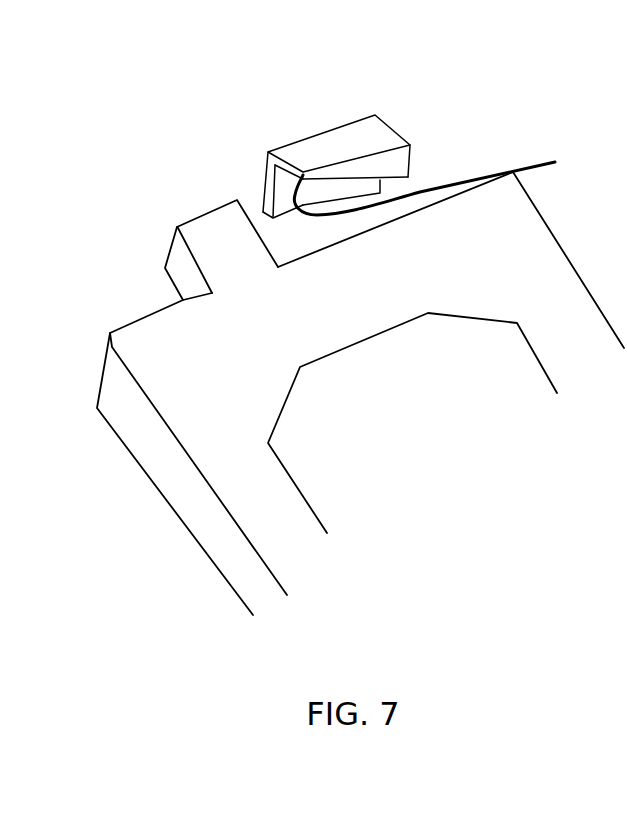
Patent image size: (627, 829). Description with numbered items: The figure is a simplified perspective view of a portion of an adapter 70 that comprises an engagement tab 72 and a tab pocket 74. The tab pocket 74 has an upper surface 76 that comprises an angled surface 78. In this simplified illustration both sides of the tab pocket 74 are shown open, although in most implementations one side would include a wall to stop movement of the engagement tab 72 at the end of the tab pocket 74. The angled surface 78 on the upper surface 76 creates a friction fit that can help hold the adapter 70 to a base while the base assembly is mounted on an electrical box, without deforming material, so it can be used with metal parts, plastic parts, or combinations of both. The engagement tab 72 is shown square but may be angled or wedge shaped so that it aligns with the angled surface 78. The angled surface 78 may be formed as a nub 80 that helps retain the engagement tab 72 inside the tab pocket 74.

The adapter 70 is at (143, 428).
The engagement tab 72 is at (210, 230).
The tab pocket 74 is at (404, 116).
The upper surface 76 is at (340, 133).
The angled surface 78 is at (443, 179).
The nub 80 is at (408, 175).